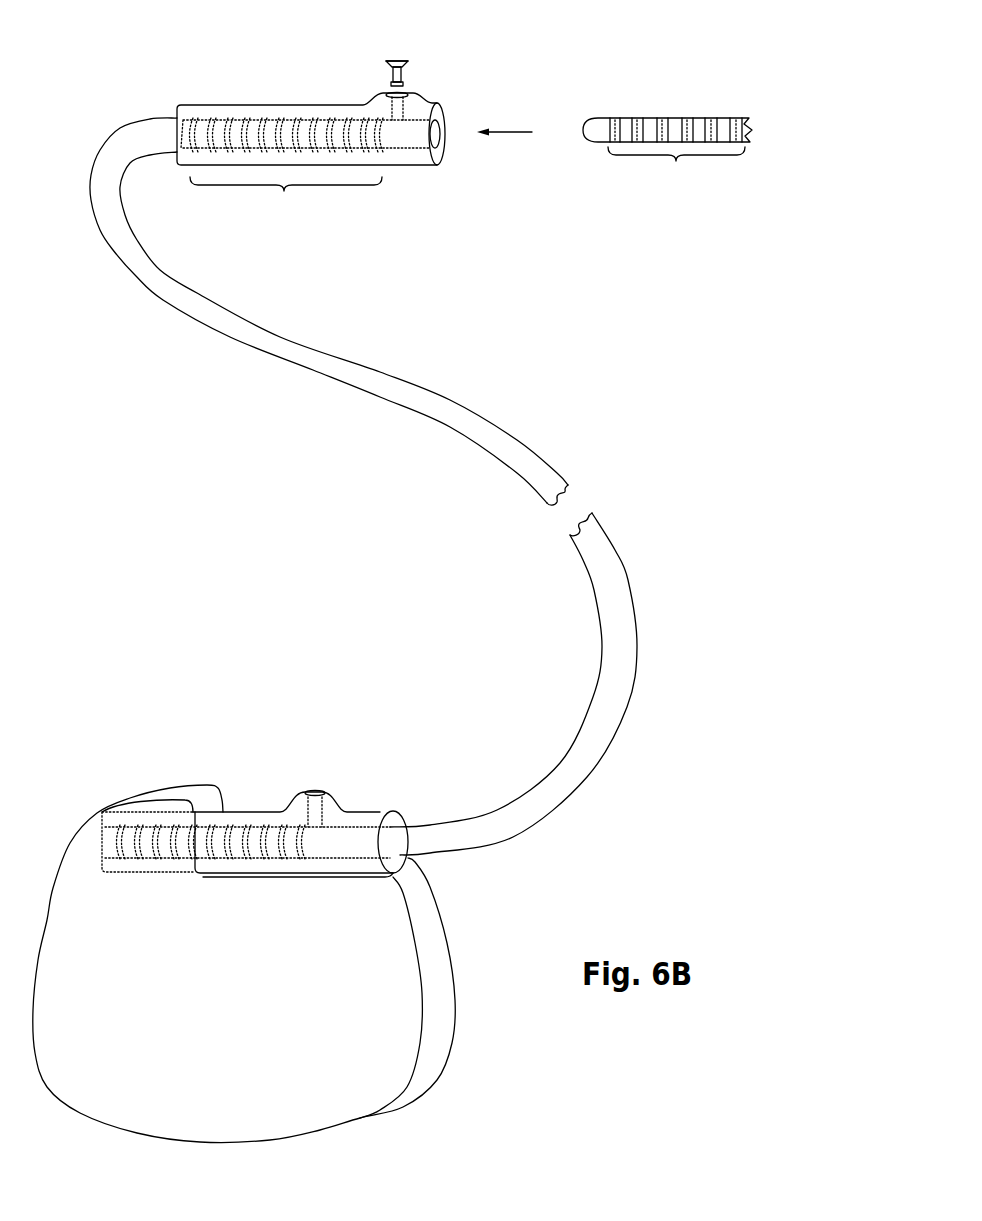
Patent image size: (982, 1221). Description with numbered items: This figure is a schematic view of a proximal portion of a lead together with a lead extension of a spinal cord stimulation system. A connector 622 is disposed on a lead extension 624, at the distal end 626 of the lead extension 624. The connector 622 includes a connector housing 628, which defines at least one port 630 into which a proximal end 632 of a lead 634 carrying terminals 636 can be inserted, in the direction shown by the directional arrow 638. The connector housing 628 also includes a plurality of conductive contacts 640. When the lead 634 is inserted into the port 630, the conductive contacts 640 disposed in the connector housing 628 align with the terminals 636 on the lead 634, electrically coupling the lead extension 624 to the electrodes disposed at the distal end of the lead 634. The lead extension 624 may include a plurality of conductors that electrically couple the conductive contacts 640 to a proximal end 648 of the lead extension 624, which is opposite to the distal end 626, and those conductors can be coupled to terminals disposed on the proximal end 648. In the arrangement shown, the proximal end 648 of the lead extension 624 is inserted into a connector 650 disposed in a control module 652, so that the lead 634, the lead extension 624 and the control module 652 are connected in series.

The connector 622 is at (270, 103).
The lead extension 624 is at (385, 372).
The distal end 626 is at (313, 113).
The connector housing 628 is at (218, 113).
The port 630 is at (455, 152).
The proximal end 632 is at (667, 95).
The lead 634 is at (672, 118).
The terminals 636 is at (676, 165).
The directional arrow 638 is at (510, 130).
The conductive contacts 640 is at (286, 197).
The proximal end 648 is at (428, 798).
The connector 650 is at (248, 808).
The control module 652 is at (246, 921).